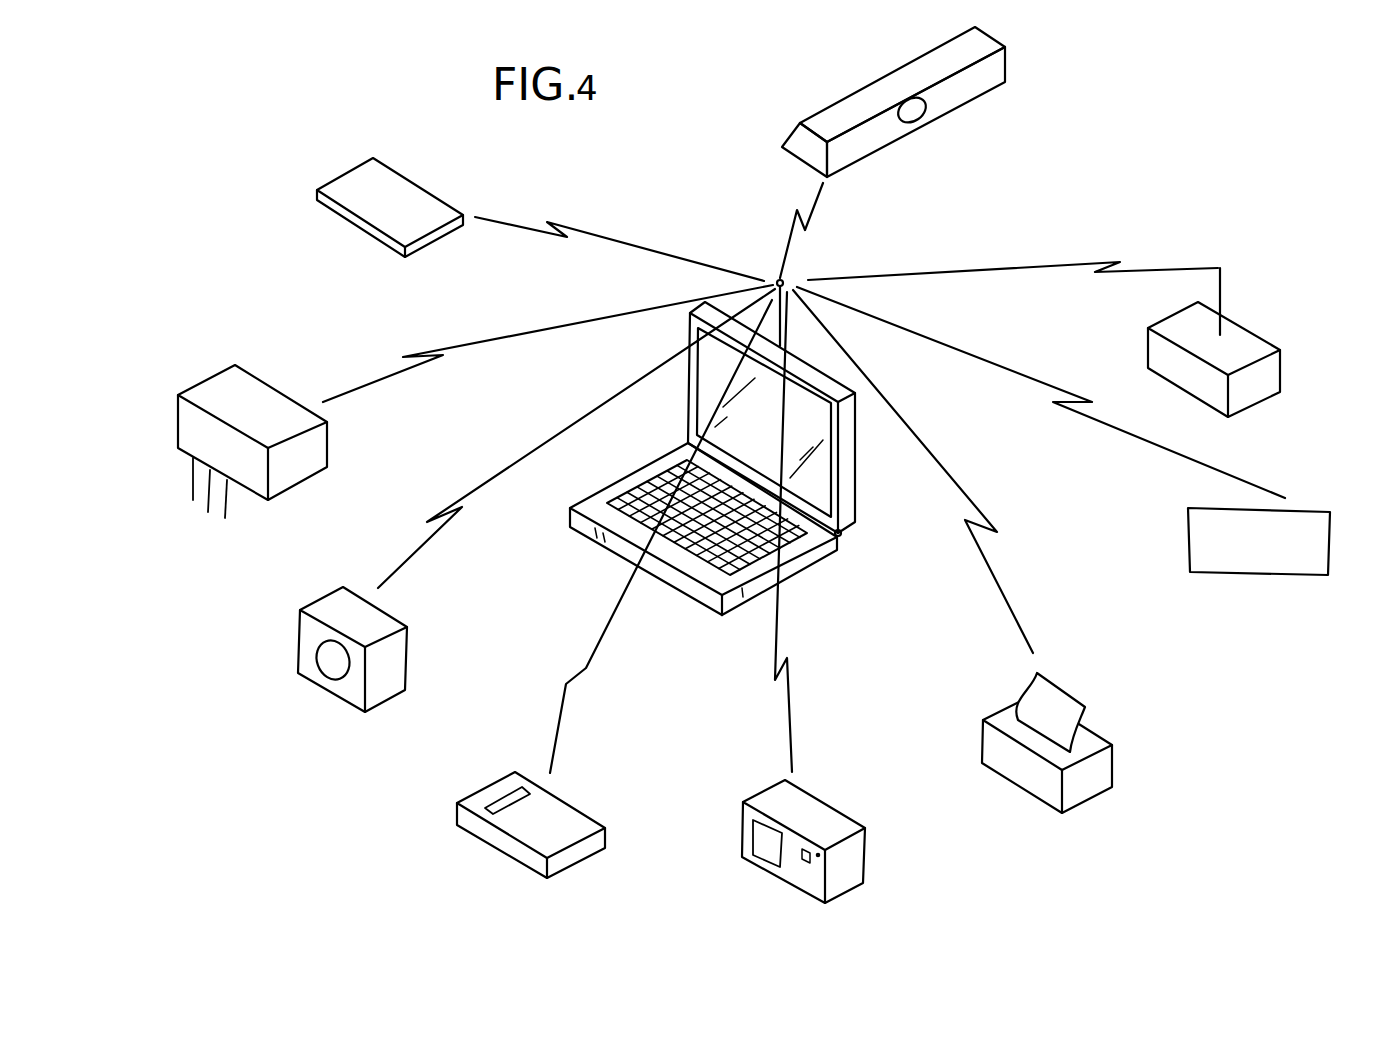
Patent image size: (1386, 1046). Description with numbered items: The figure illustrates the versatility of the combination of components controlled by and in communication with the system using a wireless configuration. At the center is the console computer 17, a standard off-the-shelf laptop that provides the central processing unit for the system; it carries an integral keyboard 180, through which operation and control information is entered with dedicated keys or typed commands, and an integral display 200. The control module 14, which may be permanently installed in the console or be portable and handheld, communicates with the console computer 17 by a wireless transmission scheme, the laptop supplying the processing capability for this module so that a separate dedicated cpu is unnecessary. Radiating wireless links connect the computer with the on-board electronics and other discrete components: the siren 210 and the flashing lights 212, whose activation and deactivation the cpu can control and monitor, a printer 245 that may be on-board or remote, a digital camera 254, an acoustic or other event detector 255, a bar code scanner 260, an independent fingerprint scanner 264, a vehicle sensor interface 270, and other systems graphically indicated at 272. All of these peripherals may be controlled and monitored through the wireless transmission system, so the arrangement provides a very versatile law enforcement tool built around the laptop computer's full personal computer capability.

The control module 14 is at (797, 883).
The console computer 17 is at (685, 590).
The keyboard 180 is at (627, 515).
The display 200 is at (822, 470).
The siren 210 is at (924, 103).
The flashing lights 212 is at (870, 147).
The printer 245 is at (1103, 772).
The digital camera 254 is at (400, 660).
The acoustic or other event detector 255 is at (1253, 578).
The bar code scanner 260 is at (387, 238).
The independent fingerprint scanner 264 is at (572, 813).
The vehicle sensor interface 270 is at (1270, 380).
The other systems 272 is at (312, 467).